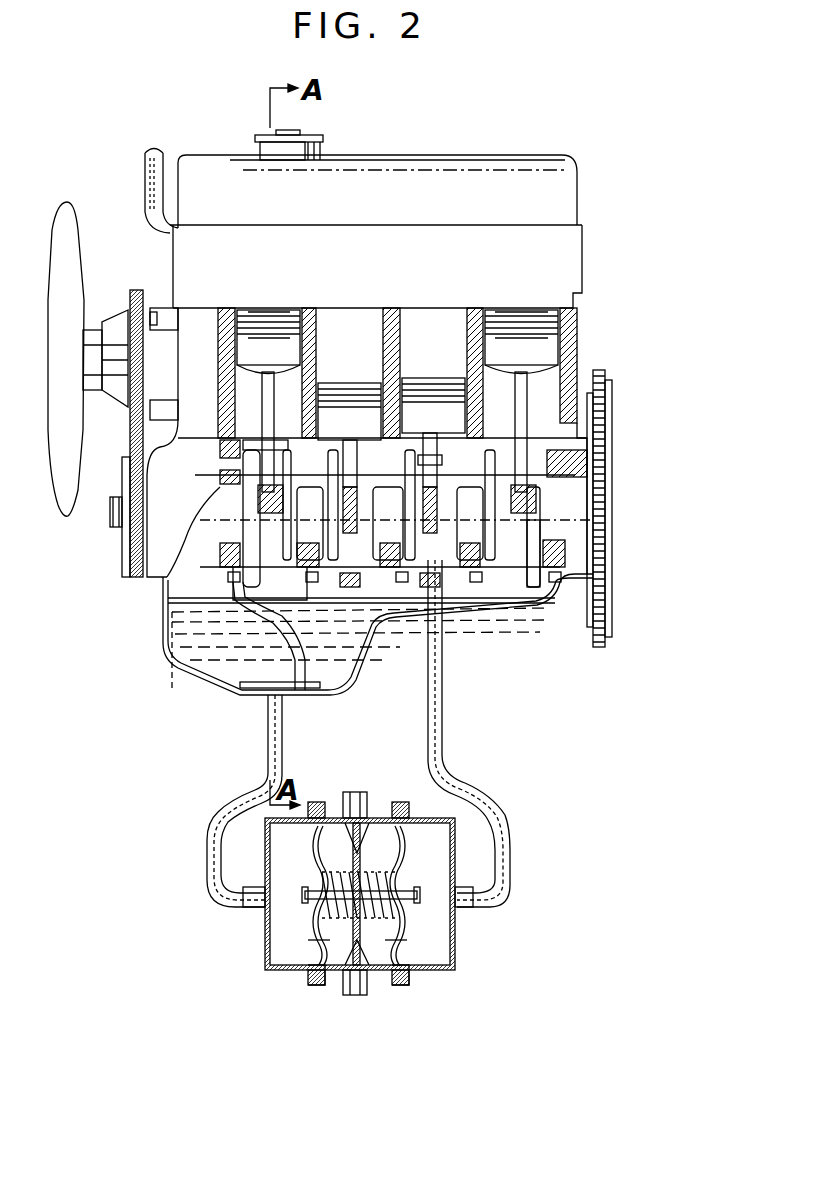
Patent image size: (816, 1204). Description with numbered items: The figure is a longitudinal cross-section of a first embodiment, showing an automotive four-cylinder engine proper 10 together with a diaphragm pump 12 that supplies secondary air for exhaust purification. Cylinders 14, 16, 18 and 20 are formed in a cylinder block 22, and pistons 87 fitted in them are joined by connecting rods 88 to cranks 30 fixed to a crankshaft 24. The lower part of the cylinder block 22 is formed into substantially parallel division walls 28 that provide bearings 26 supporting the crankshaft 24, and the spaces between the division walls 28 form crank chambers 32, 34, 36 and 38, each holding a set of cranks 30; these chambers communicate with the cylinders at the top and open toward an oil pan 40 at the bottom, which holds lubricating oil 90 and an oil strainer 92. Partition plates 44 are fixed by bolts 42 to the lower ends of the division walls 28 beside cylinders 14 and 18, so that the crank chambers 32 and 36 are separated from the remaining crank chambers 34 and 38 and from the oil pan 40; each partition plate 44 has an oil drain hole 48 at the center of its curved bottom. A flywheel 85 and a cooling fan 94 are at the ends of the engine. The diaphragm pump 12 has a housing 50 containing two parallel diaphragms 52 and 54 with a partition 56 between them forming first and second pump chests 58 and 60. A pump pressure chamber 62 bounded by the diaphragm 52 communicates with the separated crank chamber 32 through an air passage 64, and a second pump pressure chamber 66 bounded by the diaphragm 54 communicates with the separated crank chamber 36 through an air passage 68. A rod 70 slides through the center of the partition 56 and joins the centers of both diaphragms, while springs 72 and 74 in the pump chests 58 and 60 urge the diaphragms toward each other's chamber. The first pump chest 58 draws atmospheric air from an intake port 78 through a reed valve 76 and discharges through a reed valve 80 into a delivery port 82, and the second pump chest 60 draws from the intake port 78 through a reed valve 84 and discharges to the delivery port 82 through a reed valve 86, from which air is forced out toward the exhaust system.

The engine proper 10 is at (588, 226).
The diaphragm pump 12 is at (375, 894).
The cylinder 14 is at (240, 400).
The cylinder 16 is at (350, 322).
The cylinder 18 is at (423, 322).
The cylinder 20 is at (540, 385).
The cylinder block 22 is at (580, 326).
The crankshaft 24 is at (535, 603).
The bearings 26 is at (225, 560).
The division walls 28 is at (222, 440).
The cranks 30 is at (262, 470).
The crank chamber 32 is at (222, 505).
The crank chamber 34 is at (250, 448).
The crank chamber 36 is at (430, 456).
The crank chamber 38 is at (523, 567).
The oil pan 40 is at (205, 684).
The bolts 42 is at (230, 583).
The partition plates 44 is at (245, 610).
The oil drain hole 48 is at (264, 632).
The housing 50 is at (448, 972).
The diaphragm 52 is at (318, 946).
The diaphragm 54 is at (407, 966).
The partition 56 is at (386, 874).
The first pump chest 58 is at (306, 966).
The second pump chest 60 is at (383, 963).
The pump pressure chamber 62 is at (285, 872).
The air passage 64 is at (222, 800).
The second pump pressure chamber 66 is at (396, 888).
The air passage 68 is at (470, 795).
The rod 70 is at (400, 900).
The spring 72 is at (340, 880).
The spring 74 is at (388, 945).
The reed valve 76 is at (346, 976).
The intake port 78 is at (352, 995).
The reed valve 80 is at (350, 822).
The delivery port 82 is at (355, 793).
The reed valve 84 is at (362, 994).
The flywheel 85 is at (606, 545).
The reed valve 86 is at (366, 822).
The pistons 87 is at (260, 330).
The connecting rods 88 is at (275, 392).
The lubricating oil 90 is at (185, 665).
The oil strainer 92 is at (250, 692).
The cooling fan 94 is at (72, 275).